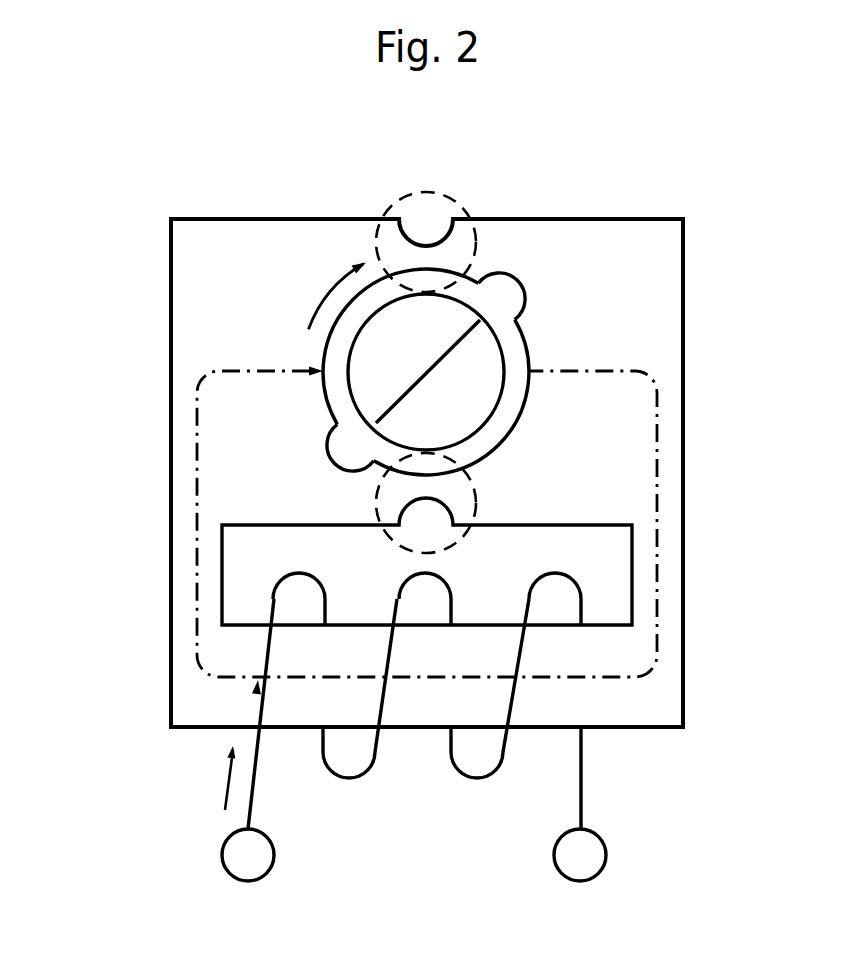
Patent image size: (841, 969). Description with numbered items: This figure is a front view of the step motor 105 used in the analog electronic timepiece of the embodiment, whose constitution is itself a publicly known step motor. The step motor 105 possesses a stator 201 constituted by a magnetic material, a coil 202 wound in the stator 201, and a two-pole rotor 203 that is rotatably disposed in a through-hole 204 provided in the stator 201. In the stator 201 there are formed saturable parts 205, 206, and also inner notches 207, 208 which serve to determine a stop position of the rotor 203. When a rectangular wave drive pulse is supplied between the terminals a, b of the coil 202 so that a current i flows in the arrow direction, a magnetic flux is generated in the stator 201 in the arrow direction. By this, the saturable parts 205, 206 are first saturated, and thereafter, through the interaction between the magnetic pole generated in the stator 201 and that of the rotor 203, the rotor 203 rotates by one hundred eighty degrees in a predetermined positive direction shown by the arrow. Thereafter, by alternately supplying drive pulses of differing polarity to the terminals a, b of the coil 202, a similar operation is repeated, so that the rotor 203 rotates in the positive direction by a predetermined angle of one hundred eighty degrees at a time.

The step motor 105 is at (607, 203).
The stator 201 is at (604, 450).
The coil 202 is at (582, 803).
The rotor 203 is at (527, 344).
The through-hole 204 is at (503, 423).
The saturable part 205 is at (375, 243).
The saturable part 206 is at (374, 500).
The inner notch 207 is at (525, 296).
The inner notch 208 is at (330, 452).